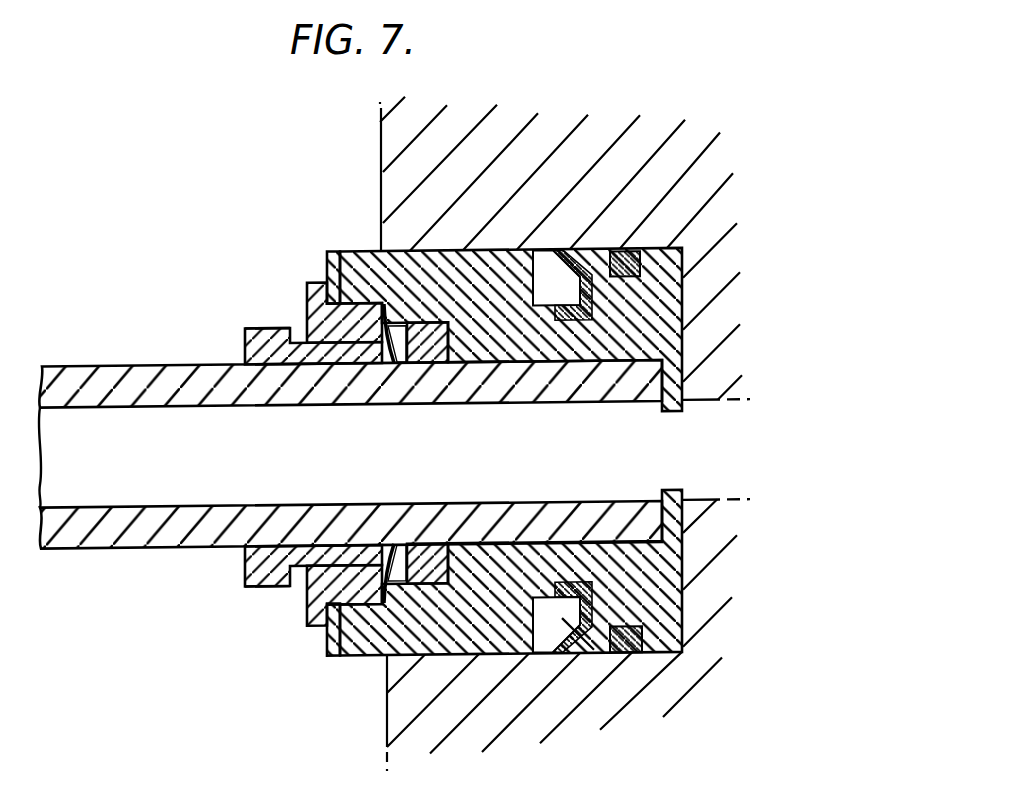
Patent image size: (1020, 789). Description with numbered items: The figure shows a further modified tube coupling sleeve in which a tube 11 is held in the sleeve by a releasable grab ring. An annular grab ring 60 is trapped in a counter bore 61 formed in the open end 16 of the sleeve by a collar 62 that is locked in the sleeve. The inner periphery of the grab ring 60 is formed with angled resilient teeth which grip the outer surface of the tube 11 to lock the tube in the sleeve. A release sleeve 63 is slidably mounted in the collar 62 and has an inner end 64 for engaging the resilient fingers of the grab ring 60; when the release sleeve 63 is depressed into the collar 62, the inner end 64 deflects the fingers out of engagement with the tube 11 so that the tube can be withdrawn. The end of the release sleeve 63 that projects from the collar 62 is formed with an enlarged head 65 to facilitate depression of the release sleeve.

The tube 11 is at (73, 373).
The open end 16 is at (328, 633).
The annular grab ring 60 is at (395, 312).
The counter bore 61 is at (328, 255).
The collar 62 is at (305, 293).
The release sleeve 63 is at (245, 350).
The inner end 64 is at (357, 367).
The enlarged head 65 is at (251, 331).